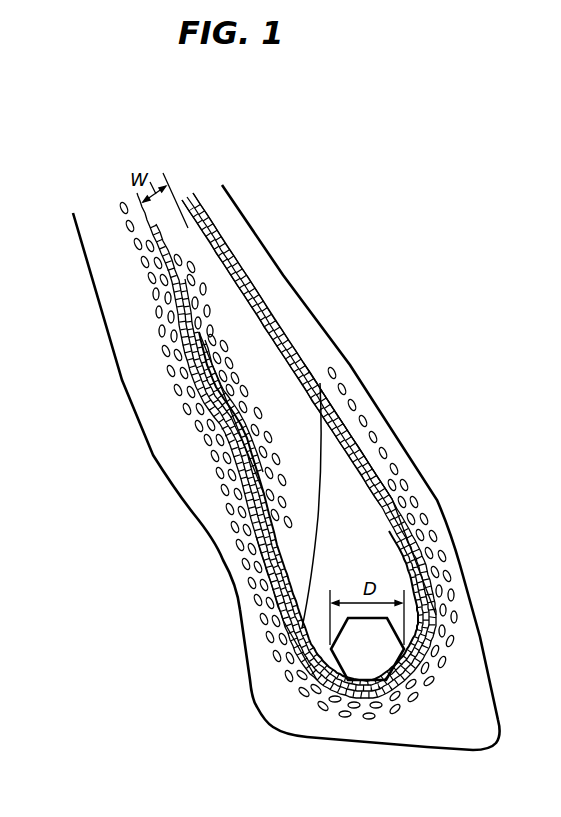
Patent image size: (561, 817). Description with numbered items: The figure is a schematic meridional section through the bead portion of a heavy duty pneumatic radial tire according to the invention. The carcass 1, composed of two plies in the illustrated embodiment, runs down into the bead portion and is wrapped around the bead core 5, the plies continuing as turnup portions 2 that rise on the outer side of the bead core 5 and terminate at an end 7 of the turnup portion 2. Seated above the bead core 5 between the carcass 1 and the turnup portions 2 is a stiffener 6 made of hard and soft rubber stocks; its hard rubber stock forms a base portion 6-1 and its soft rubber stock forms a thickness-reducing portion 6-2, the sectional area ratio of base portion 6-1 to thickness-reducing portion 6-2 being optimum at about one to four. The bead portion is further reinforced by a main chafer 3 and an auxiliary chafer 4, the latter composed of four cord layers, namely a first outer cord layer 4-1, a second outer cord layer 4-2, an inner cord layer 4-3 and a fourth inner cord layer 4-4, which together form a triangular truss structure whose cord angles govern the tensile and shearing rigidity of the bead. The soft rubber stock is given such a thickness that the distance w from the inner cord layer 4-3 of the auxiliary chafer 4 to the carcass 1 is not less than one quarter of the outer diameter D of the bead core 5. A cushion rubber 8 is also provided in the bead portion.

The carcass 1 is at (192, 302).
The turnup portions 2 is at (282, 575).
The main chafer 3 is at (283, 622).
The auxiliary chafer 4 is at (160, 276).
The first outer cord layer 4-1 is at (188, 367).
The second outer cord layer 4-2 is at (230, 422).
The inner cord layer 4-3 is at (222, 240).
The fourth inner cord layer 4-4 is at (272, 320).
The bead core 5 is at (362, 670).
The stiffener 6 is at (343, 480).
The base portion 6-1 is at (372, 540).
The thickness-reducing portion 6-2 is at (290, 427).
The end of the turnup portion 7 is at (270, 327).
The cushion rubber 8 is at (150, 255).